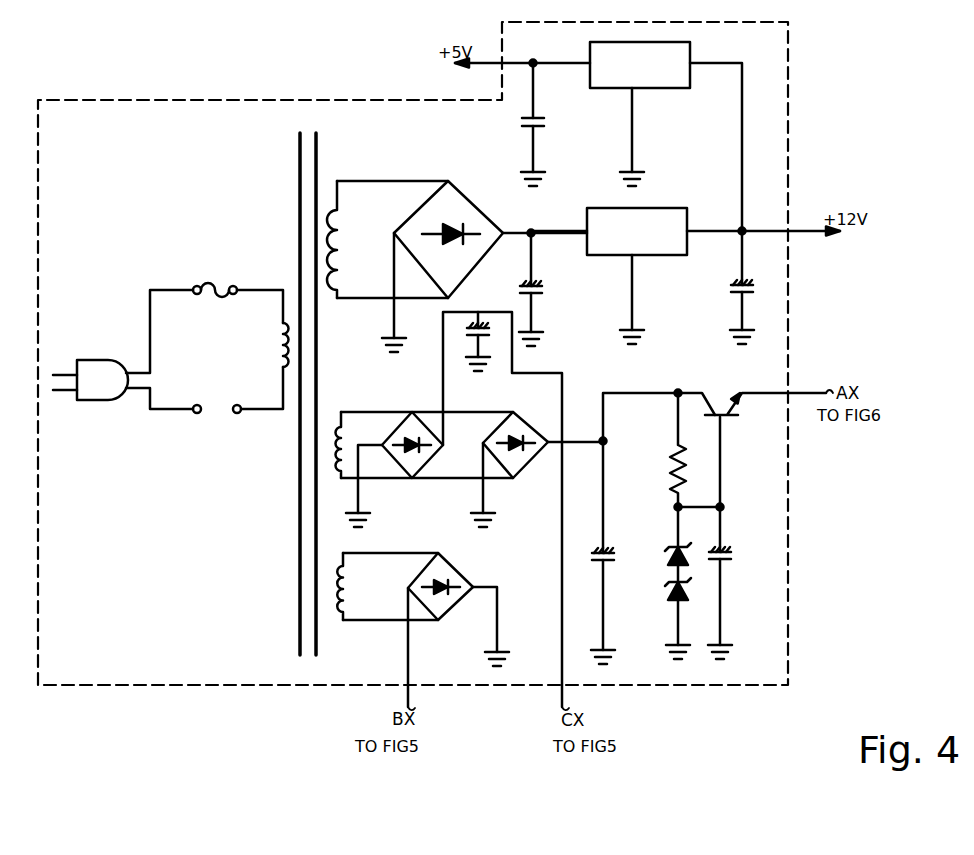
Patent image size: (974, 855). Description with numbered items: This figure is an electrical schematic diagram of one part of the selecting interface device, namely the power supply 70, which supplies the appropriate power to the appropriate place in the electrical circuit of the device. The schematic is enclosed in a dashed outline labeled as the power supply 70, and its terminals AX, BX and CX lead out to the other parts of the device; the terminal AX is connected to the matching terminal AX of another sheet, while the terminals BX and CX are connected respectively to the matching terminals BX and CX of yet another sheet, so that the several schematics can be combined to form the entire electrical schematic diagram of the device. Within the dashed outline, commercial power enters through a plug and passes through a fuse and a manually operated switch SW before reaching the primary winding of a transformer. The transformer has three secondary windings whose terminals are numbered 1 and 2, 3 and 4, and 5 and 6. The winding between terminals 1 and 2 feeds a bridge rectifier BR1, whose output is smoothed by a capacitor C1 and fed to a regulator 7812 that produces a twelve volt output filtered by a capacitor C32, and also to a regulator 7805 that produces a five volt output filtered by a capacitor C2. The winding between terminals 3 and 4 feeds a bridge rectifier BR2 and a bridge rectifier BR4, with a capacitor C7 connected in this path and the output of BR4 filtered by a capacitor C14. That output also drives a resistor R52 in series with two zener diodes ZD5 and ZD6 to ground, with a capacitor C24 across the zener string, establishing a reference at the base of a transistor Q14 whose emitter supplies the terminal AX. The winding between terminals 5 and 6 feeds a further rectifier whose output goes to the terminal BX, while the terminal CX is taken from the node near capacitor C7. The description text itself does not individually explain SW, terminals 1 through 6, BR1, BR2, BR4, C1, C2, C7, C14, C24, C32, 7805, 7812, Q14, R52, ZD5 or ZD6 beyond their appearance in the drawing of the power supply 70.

The power supply 70 is at (790, 73).
The power switch SW is at (171, 362).
The transformer secondary terminal 1 is at (392, 170).
The transformer secondary terminal 2 is at (392, 287).
The transformer secondary terminal 3 is at (427, 401).
The transformer secondary terminal 4 is at (427, 486).
The transformer secondary terminal 5 is at (390, 542).
The transformer secondary terminal 6 is at (390, 609).
The bridge rectifier BR1 is at (442, 255).
The bridge rectifier BR2 is at (412, 434).
The bridge rectifier BR4 is at (537, 459).
The filter capacitor C1 is at (515, 289).
The capacitor C2 is at (522, 124).
The filter capacitor C7 is at (473, 341).
The filter capacitor C14 is at (594, 552).
The capacitor C24 is at (708, 583).
The filter capacitor C32 is at (731, 287).
The 5 volt regulator 7805 is at (656, 136).
The 12 volt regulator 7812 is at (637, 276).
The transistor Q14 is at (763, 439).
The resistor R52 is at (657, 450).
The zener diode ZD5 is at (659, 544).
The zener diode ZD6 is at (659, 618).